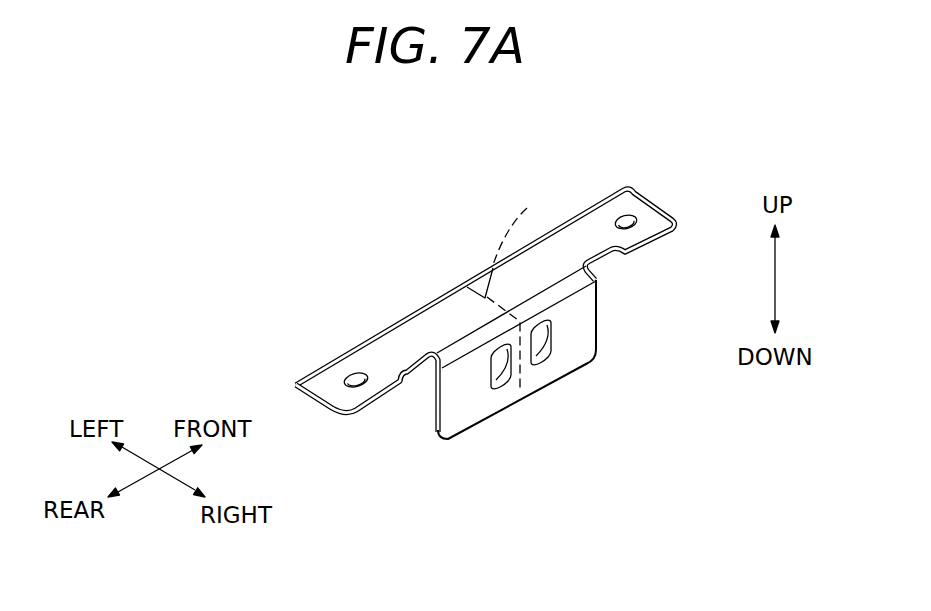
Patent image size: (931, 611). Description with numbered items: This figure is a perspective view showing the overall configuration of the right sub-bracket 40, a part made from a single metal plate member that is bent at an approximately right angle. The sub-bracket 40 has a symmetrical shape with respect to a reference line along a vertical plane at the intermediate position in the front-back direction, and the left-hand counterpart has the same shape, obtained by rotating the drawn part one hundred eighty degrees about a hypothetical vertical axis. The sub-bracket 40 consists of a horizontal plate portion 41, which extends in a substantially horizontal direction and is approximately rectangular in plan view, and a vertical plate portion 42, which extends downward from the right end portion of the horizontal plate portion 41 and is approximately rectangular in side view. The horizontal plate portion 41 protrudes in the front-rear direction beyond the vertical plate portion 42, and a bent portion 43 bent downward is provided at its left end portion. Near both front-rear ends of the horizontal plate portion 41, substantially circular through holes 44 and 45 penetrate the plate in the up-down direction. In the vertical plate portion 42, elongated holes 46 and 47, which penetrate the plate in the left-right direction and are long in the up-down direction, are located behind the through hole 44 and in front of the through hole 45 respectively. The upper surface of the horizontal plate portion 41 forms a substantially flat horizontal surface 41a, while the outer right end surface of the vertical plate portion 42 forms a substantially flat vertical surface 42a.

The sub-bracket 40 is at (502, 302).
The horizontal plate portion 41 is at (483, 335).
The horizontal surface 41a is at (485, 310).
The vertical plate portion 42 is at (502, 382).
The vertical surface 42a is at (532, 370).
The bent portion 43 is at (358, 345).
The through hole 44 is at (637, 222).
The through hole 45 is at (355, 380).
The elongated hole 46 is at (553, 348).
The elongated hole 47 is at (498, 384).